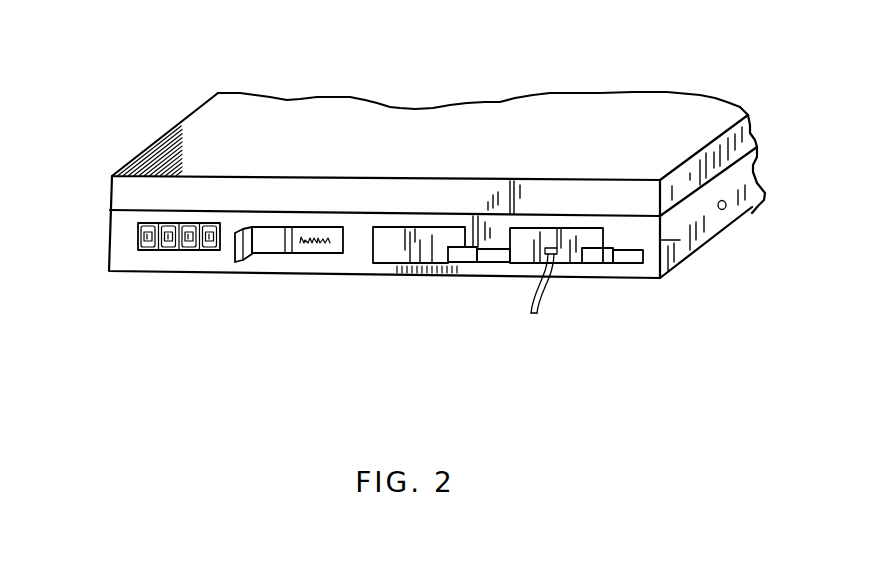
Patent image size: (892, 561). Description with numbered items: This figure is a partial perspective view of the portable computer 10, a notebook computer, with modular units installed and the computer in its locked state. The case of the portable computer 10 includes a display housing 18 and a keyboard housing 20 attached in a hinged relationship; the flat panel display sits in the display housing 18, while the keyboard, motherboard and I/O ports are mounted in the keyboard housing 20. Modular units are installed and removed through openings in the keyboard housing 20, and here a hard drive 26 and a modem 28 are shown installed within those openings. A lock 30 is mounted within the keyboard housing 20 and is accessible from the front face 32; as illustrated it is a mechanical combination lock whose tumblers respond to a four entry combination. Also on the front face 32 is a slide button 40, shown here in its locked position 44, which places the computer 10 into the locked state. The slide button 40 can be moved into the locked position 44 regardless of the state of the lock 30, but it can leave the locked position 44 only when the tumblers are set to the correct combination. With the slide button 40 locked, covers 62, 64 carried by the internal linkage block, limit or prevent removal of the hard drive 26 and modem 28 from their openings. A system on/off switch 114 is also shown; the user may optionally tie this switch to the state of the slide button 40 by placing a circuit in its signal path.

The portable computer 10 is at (664, 80).
The display housing 18 is at (662, 188).
The keyboard housing 20 is at (680, 250).
The system on/off switch 114 is at (730, 208).
The front face 32 is at (109, 232).
The lock 30 is at (179, 262).
The slide button 40 is at (275, 228).
The locked position 44 is at (305, 264).
The hard drive 26 is at (397, 259).
The cover 62 is at (460, 262).
The modem 28 is at (523, 261).
The cover 64 is at (593, 259).